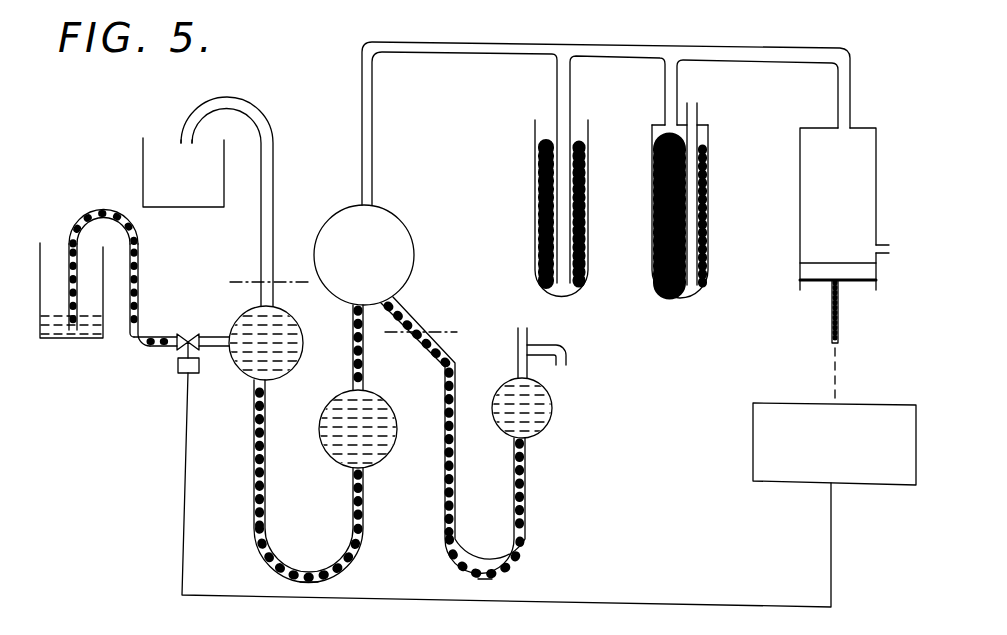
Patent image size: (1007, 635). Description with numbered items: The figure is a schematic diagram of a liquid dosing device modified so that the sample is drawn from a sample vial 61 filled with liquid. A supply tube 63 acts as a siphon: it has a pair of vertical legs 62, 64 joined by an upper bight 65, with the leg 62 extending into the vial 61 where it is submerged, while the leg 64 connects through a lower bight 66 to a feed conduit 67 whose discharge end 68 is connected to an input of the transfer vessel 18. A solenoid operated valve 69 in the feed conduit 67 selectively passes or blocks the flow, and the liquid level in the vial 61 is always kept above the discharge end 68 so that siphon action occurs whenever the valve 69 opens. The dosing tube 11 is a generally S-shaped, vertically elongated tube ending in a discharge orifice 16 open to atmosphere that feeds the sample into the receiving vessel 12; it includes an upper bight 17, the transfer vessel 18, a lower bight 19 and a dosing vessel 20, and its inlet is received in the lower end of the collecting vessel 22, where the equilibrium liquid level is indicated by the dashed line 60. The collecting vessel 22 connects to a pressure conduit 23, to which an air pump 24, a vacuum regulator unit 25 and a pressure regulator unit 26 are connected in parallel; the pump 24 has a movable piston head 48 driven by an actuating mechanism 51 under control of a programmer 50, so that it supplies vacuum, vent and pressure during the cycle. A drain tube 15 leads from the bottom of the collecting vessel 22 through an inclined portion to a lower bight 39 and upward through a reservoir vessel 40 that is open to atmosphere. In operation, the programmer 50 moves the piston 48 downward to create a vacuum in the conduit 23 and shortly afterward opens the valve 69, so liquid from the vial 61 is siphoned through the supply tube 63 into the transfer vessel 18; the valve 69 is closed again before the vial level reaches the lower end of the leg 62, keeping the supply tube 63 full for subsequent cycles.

The dosing tube 11 is at (313, 511).
The receiving vessel 12 is at (143, 156).
The drain tube 15 is at (491, 503).
The discharge orifice 16 is at (180, 141).
The upper bight 17 is at (245, 96).
The transfer vessel 18 is at (303, 343).
The lower bight 19 is at (335, 582).
The dosing vessel 20 is at (392, 396).
The collecting vessel 22 is at (400, 217).
The pressure conduit 23 is at (491, 42).
The air pump 24 is at (798, 232).
The vacuum regulator unit 25 is at (712, 203).
The pressure regulator unit 26 is at (528, 171).
The lower bight 39 is at (512, 582).
The reservoir vessel 40 is at (512, 383).
The piston head 48 is at (830, 252).
The programmer 50 is at (789, 402).
The actuating mechanism 51 is at (832, 328).
The liquid level 60 is at (304, 280).
The vial 61 is at (42, 340).
The leg 62 is at (68, 246).
The supply tube 63 is at (107, 273).
The leg 64 is at (138, 251).
The upper bight 65 is at (111, 211).
The lower bight 66 is at (138, 346).
The feed conduit 67 is at (212, 326).
The discharge end 68 is at (228, 352).
The solenoid operated valve 69 is at (178, 367).